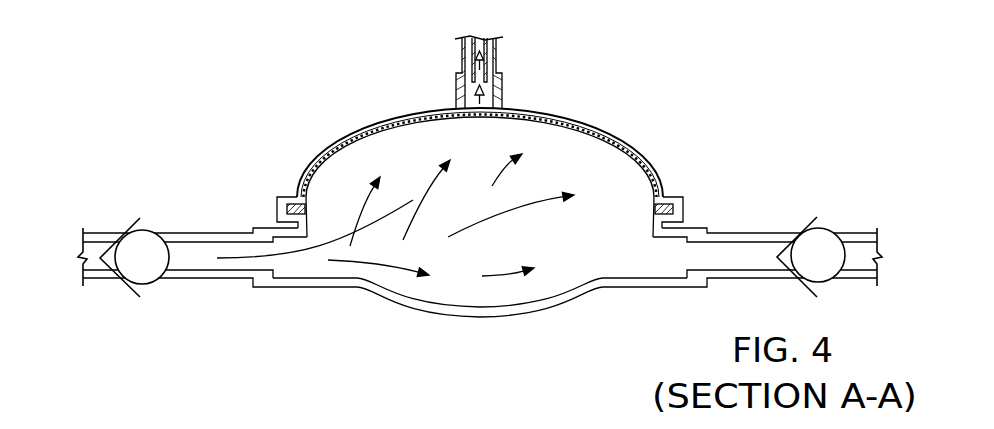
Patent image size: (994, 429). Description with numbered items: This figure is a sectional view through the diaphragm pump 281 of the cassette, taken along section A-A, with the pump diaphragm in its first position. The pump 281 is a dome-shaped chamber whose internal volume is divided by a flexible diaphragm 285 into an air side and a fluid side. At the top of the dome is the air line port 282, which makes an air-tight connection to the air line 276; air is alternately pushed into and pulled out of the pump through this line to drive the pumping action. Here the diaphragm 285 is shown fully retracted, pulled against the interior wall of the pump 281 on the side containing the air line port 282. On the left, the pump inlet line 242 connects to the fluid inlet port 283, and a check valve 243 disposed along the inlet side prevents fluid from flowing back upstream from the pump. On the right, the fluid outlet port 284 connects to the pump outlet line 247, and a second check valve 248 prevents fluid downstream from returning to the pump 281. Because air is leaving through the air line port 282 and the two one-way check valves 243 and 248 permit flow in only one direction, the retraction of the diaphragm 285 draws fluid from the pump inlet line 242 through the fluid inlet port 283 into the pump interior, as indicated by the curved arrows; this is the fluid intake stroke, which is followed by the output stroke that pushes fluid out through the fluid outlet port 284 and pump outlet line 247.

The air line 276 is at (468, 62).
The air line port 282 is at (499, 100).
The flexible diaphragm 285 is at (594, 132).
The pump 281 is at (362, 131).
The check valve 243 is at (149, 236).
The pump inlet line 242 is at (208, 232).
The fluid inlet port 283 is at (290, 272).
The fluid outlet port 284 is at (672, 270).
The pump outlet line 247 is at (767, 233).
The check valve 248 is at (827, 233).